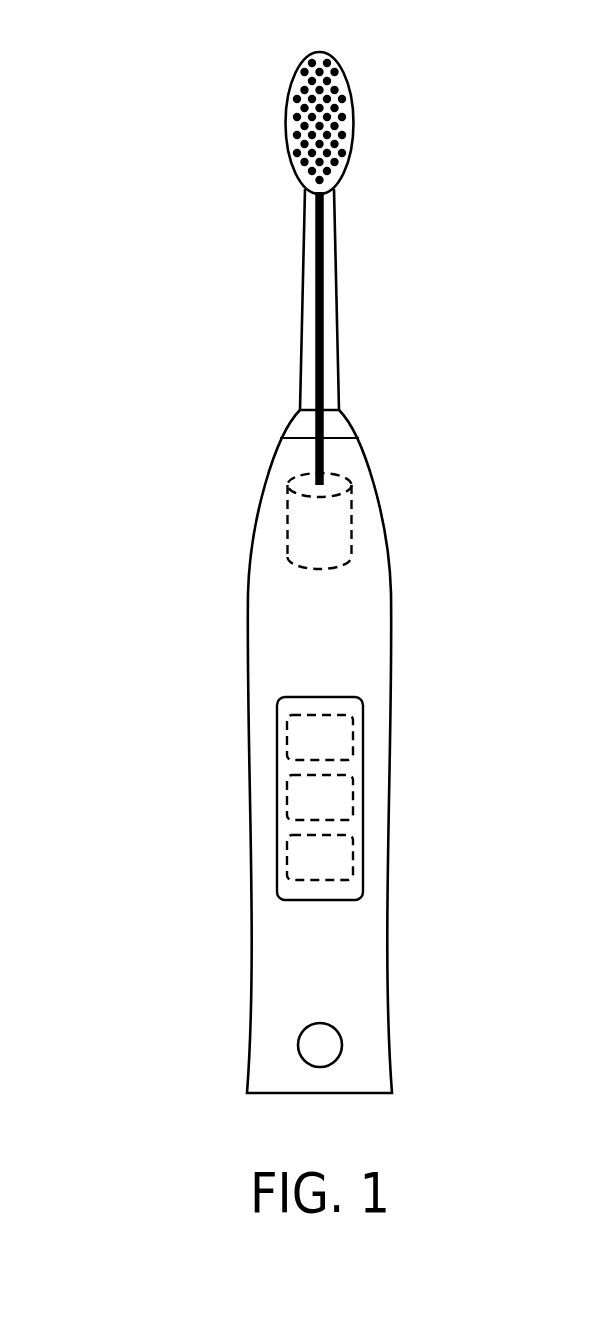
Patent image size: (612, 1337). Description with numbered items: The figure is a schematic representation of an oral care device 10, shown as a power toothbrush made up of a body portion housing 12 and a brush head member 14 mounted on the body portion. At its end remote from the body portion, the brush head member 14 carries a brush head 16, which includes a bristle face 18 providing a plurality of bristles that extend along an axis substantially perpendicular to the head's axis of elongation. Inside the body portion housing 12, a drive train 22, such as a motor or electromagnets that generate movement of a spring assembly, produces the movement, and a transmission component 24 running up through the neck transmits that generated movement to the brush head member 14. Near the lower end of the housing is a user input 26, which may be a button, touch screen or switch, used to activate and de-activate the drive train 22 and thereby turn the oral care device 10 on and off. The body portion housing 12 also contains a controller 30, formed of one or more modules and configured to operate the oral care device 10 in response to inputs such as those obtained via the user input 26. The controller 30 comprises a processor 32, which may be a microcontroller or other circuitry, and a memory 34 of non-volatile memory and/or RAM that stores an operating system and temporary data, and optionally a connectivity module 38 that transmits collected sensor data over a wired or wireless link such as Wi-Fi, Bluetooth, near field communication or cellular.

The oral care device 10 is at (116, 114).
The body portion housing 12 is at (243, 618).
The brush head member 14 is at (295, 283).
The brush head 16 is at (292, 120).
The bristle face 18 is at (347, 112).
The drive train 22 is at (338, 527).
The transmission component 24 is at (320, 350).
The user input 26 is at (306, 1045).
The controller 30 is at (287, 768).
The processor 32 is at (346, 737).
The memory 34 is at (346, 795).
The connectivity module 38 is at (346, 858).